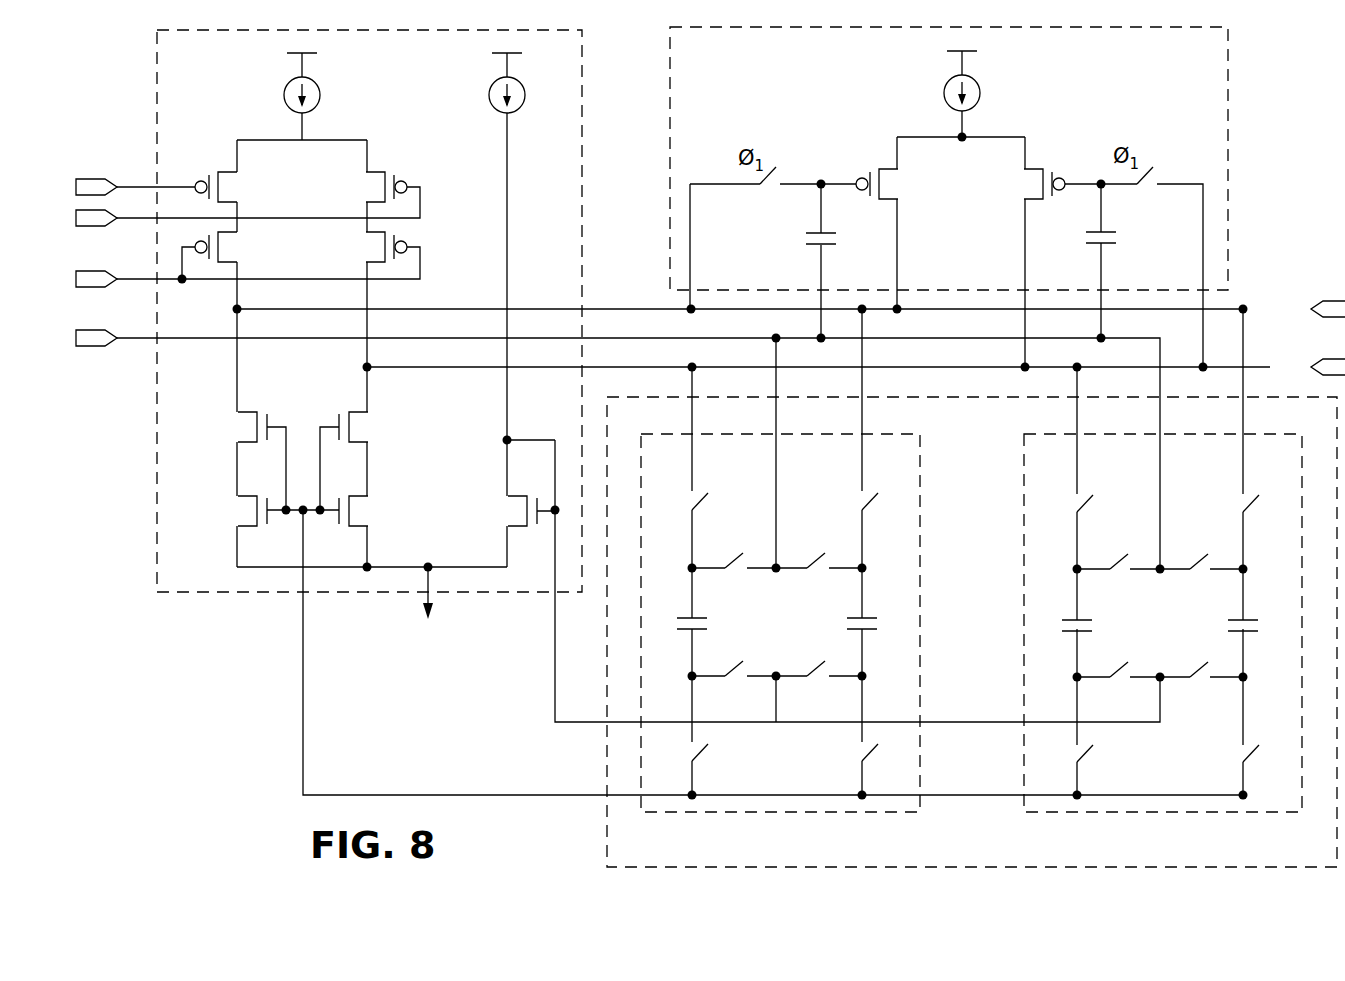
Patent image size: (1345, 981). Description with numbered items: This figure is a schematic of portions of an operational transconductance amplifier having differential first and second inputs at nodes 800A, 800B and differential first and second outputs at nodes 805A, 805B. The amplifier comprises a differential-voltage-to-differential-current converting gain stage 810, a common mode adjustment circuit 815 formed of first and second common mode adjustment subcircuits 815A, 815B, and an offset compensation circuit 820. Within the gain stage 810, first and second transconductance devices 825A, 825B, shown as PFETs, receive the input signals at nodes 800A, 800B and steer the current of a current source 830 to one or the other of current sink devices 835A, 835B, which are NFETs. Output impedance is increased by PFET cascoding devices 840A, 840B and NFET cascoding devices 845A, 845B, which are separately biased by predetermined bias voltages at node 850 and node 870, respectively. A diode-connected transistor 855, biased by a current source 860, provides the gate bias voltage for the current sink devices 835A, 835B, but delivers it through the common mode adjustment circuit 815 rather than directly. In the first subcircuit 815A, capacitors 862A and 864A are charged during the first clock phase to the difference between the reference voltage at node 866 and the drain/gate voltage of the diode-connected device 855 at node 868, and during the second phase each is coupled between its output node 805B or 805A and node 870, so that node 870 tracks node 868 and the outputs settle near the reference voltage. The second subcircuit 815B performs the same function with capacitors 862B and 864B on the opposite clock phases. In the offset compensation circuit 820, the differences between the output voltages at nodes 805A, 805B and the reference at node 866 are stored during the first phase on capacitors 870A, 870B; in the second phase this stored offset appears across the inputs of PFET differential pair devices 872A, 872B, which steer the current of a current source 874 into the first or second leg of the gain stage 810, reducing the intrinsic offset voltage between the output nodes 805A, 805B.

The first input node 800A is at (135, 172).
The second input node 800B is at (248, 222).
The first output node 805A is at (791, 292).
The second output node 805B is at (1257, 366).
The gain stage 810 is at (397, 311).
The common mode adjustment circuit 815 is at (945, 632).
The first common mode adjustment subcircuit 815A is at (780, 581).
The second common mode adjustment subcircuit 815B is at (1163, 581).
The offset compensation circuit 820 is at (978, 158).
The first transconductance device 825A is at (244, 187).
The second transconductance device 825B is at (362, 187).
The current source 830 is at (286, 96).
The first current sink device 835A is at (264, 511).
The second current sink device 835B is at (380, 511).
The first cascoding device 840A is at (244, 247).
The second cascoding device 840B is at (362, 247).
The first cascoding device 845A is at (238, 461).
The second cascoding device 845B is at (371, 461).
The bias voltage node 850 is at (248, 282).
The diode-connected transistor 855 is at (513, 531).
The current source 860 is at (487, 274).
The capacitor 862A is at (724, 606).
The capacitor 862B is at (1104, 607).
The capacitor 864A is at (834, 606).
The capacitor 864B is at (1213, 607).
The reference voltage node 866 is at (646, 452).
The drain/gate voltage node 868 is at (808, 560).
The bias voltage node 870 is at (749, 655).
The capacitor 870A is at (792, 261).
The capacitor 870B is at (1130, 261).
The differential pair device 872A is at (866, 184).
The differential pair device 872B is at (1057, 184).
The current source 874 is at (942, 96).